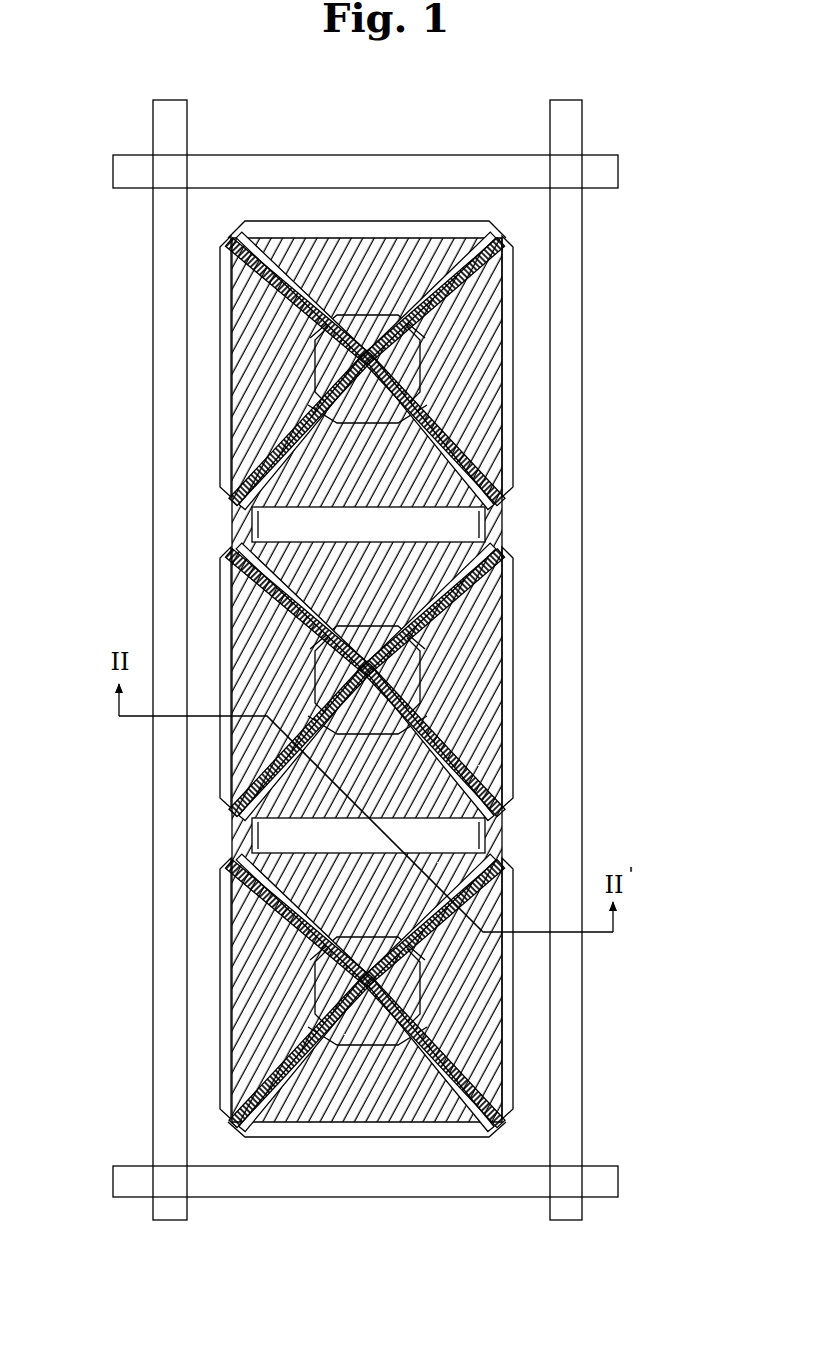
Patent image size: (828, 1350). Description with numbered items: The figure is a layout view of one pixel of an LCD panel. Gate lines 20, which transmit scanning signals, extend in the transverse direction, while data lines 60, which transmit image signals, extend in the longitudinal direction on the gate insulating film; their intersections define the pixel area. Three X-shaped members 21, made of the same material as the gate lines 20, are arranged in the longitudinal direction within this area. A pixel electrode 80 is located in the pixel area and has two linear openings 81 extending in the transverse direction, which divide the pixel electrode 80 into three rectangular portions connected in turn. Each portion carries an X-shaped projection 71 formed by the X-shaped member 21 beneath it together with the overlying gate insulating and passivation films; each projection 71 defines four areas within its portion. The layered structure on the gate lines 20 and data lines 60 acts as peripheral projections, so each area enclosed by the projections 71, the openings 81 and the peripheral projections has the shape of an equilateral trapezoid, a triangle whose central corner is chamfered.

The gate line 20 is at (318, 1200).
The X-shaped member 21 is at (483, 1060).
The data line 60 is at (582, 615).
The X-shaped projection 71 is at (430, 673).
The pixel electrode 80 is at (232, 988).
The linear opening 81 is at (489, 824).